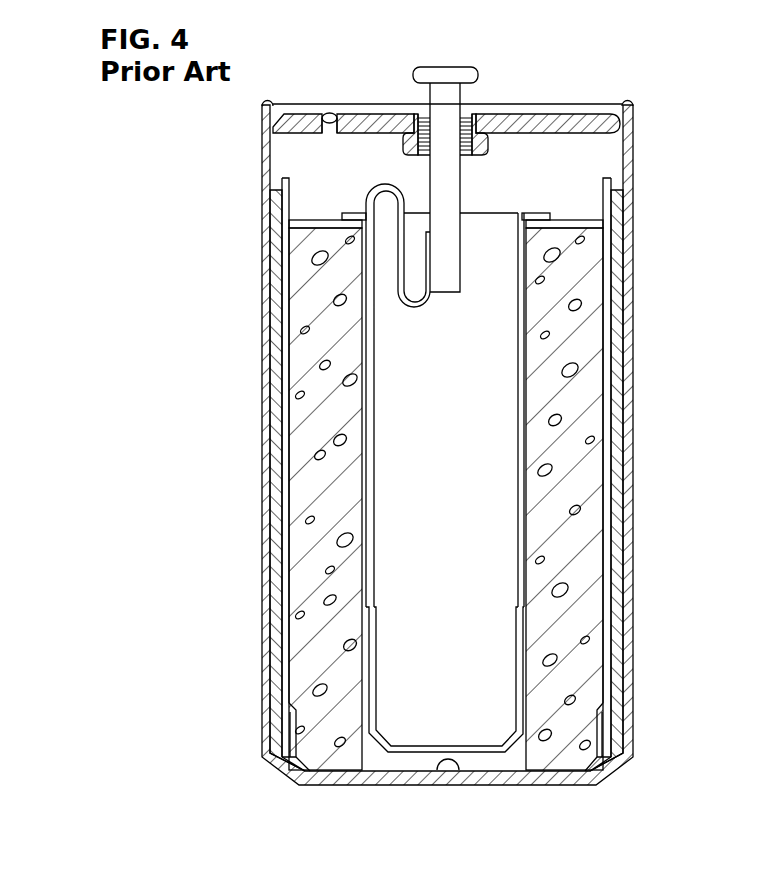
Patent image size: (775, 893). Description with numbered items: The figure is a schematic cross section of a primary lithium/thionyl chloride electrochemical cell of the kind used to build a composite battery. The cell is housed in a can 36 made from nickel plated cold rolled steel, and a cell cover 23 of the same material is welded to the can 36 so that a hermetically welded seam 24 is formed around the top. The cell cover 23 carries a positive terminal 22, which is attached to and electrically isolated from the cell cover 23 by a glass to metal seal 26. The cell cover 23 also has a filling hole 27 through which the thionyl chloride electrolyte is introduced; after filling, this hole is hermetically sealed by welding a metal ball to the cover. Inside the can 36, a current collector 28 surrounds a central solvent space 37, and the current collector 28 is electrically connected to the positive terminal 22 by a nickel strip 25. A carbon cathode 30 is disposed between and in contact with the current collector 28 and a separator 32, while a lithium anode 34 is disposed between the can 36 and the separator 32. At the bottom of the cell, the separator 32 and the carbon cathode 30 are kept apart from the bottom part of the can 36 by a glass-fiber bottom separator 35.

The positive terminal 22 is at (442, 72).
The cell cover 23 is at (557, 124).
The hermetically welded seam 24 is at (265, 100).
The nickel strip 25 is at (398, 258).
The glass to metal seal 26 is at (466, 150).
The filling hole 27 is at (334, 141).
The current collector 28 is at (367, 341).
The carbon cathode 30 is at (318, 401).
The separator 32 is at (270, 497).
The lithium anode 34 is at (277, 565).
The glass-fiber bottom separator 35 is at (449, 760).
The can 36 is at (272, 704).
The solvent space 37 is at (498, 558).